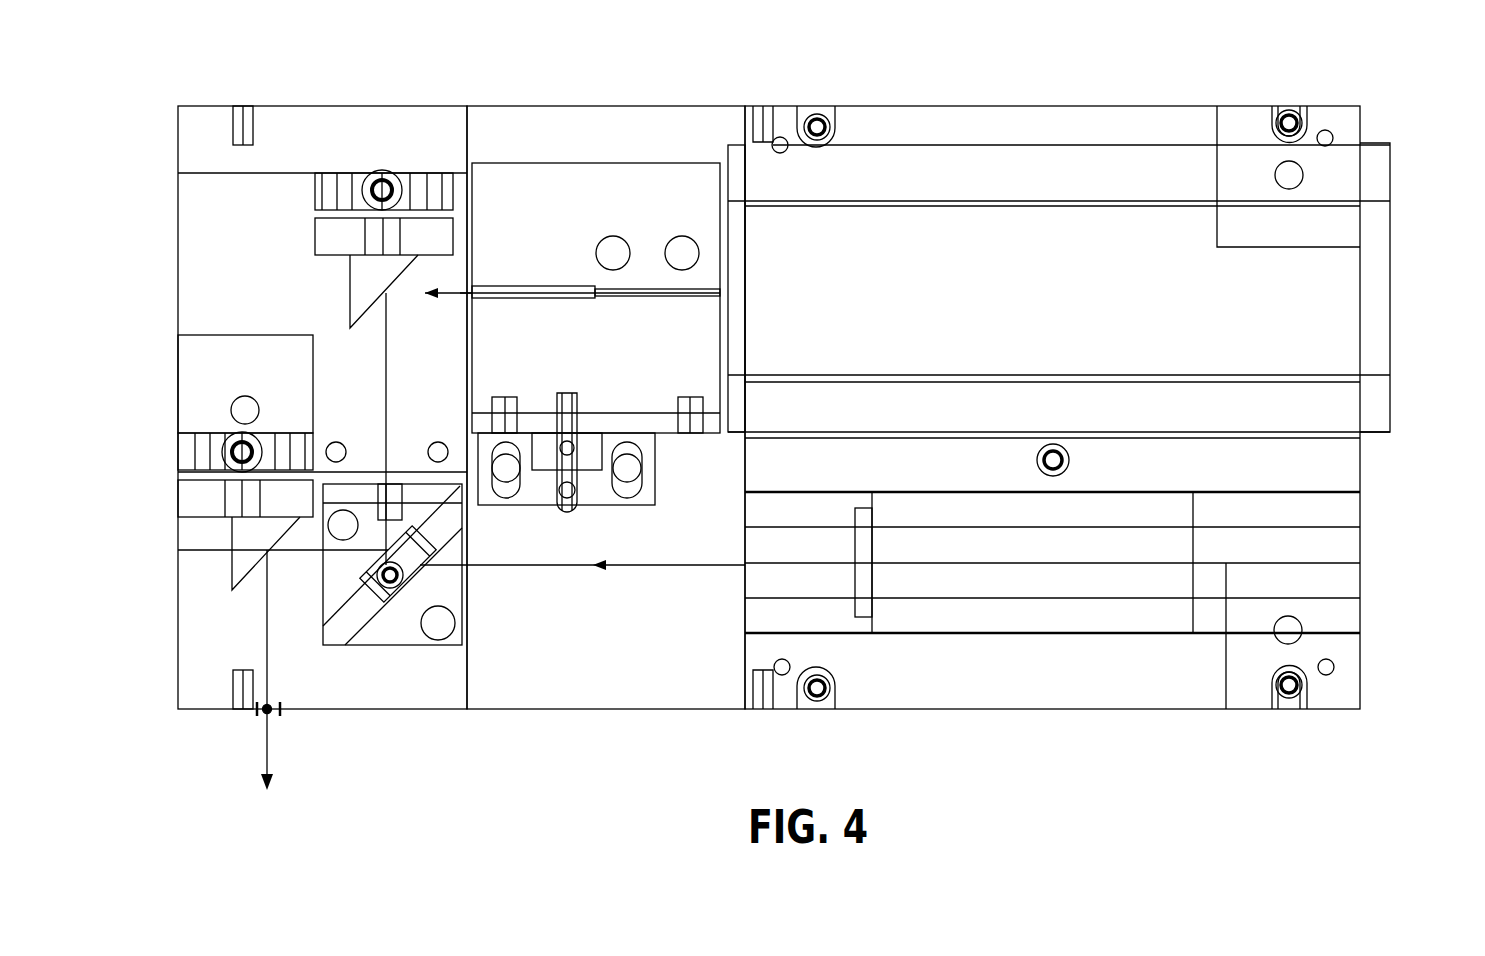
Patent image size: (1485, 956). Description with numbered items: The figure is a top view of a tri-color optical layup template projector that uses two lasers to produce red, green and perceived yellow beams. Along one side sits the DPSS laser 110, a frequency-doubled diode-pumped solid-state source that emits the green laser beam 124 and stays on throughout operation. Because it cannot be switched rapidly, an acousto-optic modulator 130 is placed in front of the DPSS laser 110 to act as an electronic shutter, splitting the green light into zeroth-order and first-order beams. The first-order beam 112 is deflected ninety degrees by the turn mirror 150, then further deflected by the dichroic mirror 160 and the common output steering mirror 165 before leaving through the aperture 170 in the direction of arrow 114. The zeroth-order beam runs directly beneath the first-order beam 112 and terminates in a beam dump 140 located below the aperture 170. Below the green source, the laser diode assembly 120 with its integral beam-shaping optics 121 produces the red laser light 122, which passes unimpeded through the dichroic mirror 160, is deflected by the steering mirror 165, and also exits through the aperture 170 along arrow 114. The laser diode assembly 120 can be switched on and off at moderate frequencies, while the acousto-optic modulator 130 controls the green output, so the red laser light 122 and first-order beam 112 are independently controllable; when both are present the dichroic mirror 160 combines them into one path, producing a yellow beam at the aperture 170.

The DPSS laser 110 is at (1382, 257).
The first-order beam 112 is at (407, 296).
The direction arrow 114 is at (270, 760).
The laser diode assembly 120 is at (1133, 562).
The beam-shaping optics 121 is at (830, 590).
The red laser light 122 is at (665, 568).
The green laser beam 124 is at (735, 290).
The acousto-optic modulator 130 is at (575, 178).
The beam dump 140 is at (264, 716).
The turn mirror 150 is at (340, 265).
The dichroic mirror 160 is at (405, 637).
The steering mirror 165 is at (242, 540).
The aperture 170 is at (281, 707).